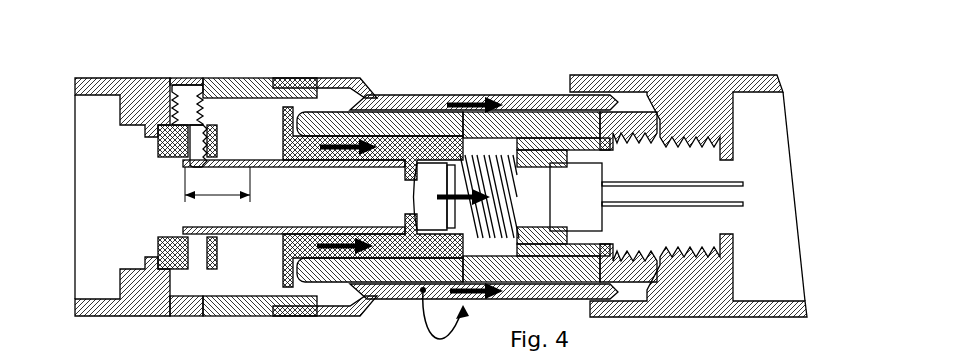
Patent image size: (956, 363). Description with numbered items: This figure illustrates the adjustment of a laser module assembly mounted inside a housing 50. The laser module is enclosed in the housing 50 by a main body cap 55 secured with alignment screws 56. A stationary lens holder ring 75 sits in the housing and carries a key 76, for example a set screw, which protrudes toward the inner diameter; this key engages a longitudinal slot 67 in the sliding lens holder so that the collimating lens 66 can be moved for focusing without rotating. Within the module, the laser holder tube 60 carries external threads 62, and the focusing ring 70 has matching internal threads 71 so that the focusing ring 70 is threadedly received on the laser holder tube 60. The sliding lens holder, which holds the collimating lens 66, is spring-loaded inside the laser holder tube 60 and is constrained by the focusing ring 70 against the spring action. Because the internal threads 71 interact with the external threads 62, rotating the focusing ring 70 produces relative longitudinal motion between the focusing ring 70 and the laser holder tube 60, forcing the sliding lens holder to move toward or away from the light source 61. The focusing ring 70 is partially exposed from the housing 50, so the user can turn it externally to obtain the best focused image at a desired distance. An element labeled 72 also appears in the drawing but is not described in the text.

The housing 50 is at (677, 97).
The main body cap 55 is at (227, 90).
The alignment screws 56 is at (185, 97).
The laser holder tube 60 is at (350, 123).
The light source 61 is at (577, 195).
The external threads 62 is at (517, 117).
The collimating lens 66 is at (437, 172).
The longitudinal slot 67 is at (217, 184).
The focusing ring 70 is at (440, 102).
The internal threads 71 is at (541, 113).
The piston 72 is at (295, 143).
The stationary lens holder ring 75 is at (172, 143).
The key 76 is at (197, 145).